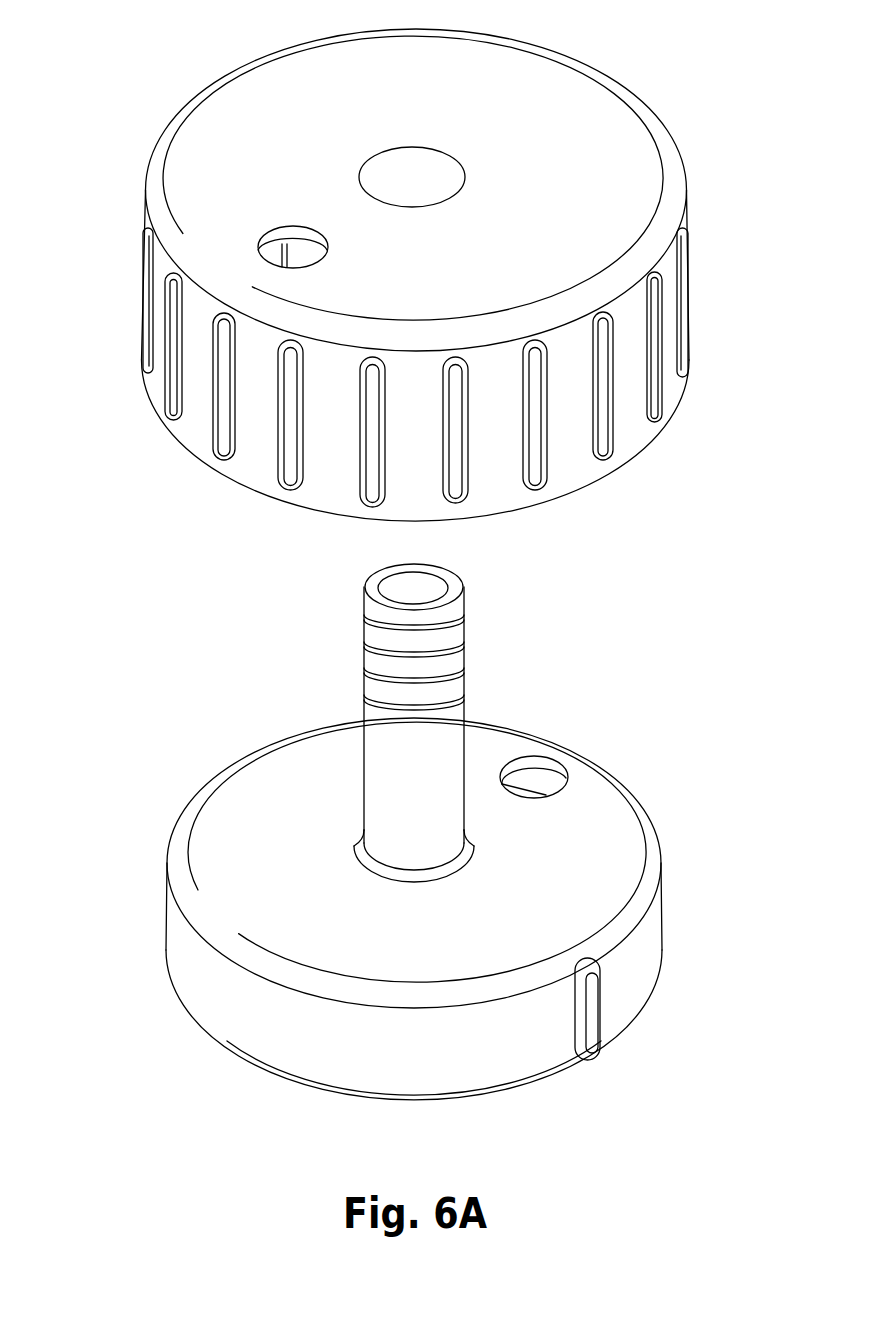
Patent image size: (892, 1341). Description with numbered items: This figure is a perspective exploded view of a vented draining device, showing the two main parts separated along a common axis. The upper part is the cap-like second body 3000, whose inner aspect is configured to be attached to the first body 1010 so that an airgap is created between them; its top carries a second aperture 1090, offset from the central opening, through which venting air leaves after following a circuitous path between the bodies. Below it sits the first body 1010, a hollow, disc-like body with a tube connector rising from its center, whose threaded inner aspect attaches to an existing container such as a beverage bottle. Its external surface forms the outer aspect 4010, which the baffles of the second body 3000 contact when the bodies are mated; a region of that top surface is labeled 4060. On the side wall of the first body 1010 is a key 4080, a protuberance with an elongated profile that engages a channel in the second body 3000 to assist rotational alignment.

The second body 3000 is at (434, 270).
The second aperture 1090 is at (262, 253).
The first body 1010 is at (446, 832).
The outer aspect 4010 is at (218, 829).
The upper surface of base 4060 is at (597, 882).
The key 4080 is at (595, 1007).